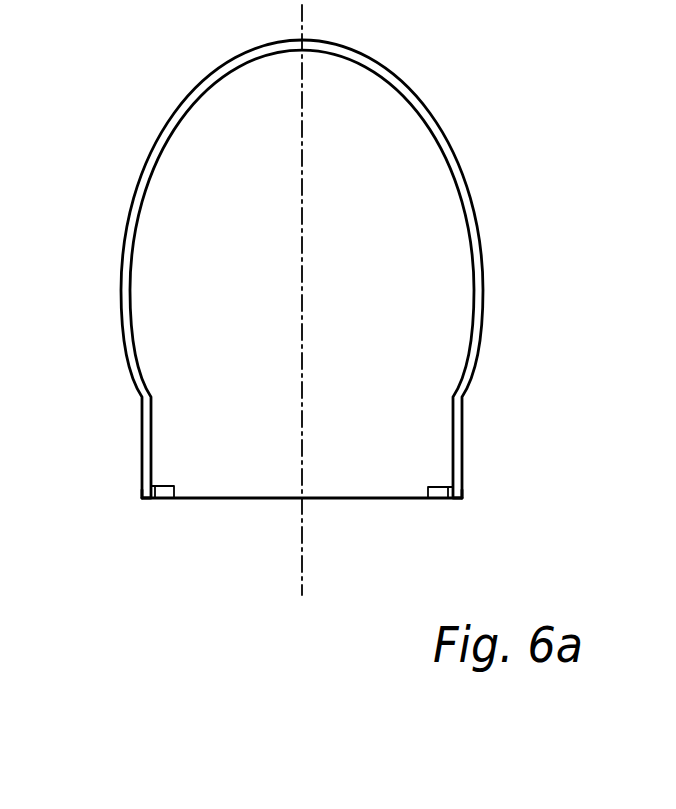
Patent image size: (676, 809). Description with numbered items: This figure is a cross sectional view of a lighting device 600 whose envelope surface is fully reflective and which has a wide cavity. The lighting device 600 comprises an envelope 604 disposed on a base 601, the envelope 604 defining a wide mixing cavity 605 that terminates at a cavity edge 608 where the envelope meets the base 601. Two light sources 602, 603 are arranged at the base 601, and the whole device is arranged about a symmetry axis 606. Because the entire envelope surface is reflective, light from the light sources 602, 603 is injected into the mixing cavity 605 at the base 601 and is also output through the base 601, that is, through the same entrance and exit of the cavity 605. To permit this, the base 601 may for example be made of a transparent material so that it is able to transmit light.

The lighting device 600 is at (118, 96).
The base 601 is at (362, 525).
The light source 602 is at (160, 492).
The light source 603 is at (440, 492).
The envelope 604 is at (464, 172).
The cavity 605 is at (390, 113).
The symmetry axis 606 is at (300, 580).
The cavity edge 608 is at (142, 497).